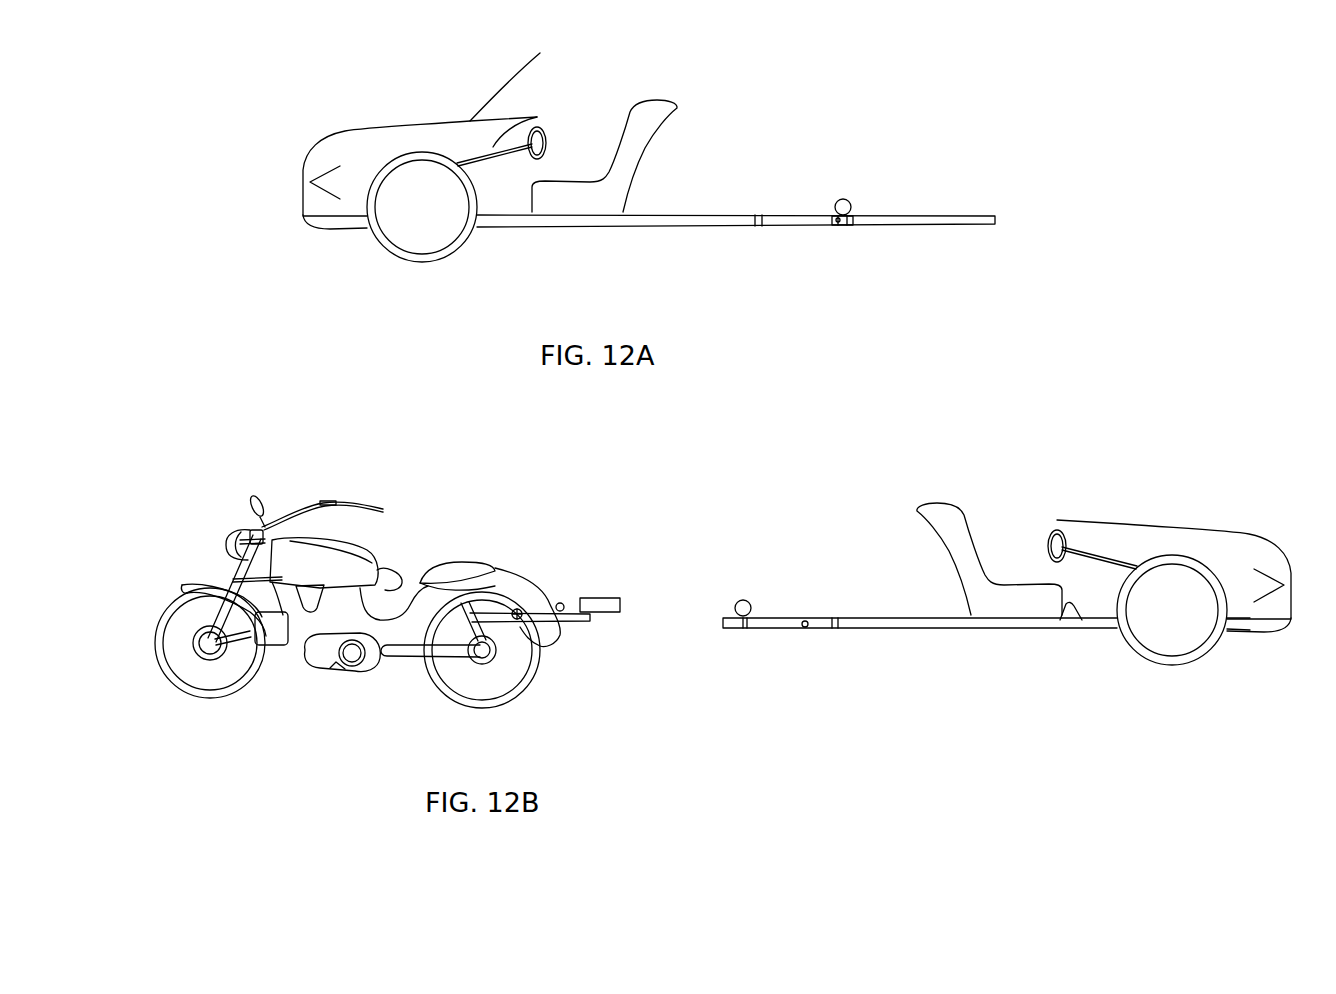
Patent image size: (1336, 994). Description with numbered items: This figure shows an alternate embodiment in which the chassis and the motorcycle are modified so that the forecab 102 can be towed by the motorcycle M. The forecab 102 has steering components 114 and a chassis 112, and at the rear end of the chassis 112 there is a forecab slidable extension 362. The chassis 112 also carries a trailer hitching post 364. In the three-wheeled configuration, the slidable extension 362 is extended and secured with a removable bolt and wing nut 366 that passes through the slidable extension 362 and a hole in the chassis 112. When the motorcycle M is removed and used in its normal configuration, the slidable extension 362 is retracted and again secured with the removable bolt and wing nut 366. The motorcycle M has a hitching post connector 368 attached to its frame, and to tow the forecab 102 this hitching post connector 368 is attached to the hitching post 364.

In FIG. 12A, the forecab 102 is at (385, 123).
In FIG. 12B, the forecab 102 is at (1212, 517).
In FIG. 12B, the chassis 112 is at (1067, 610).
In FIG. 12A, the steering components 114 is at (523, 117).
In FIG. 12A, the forecab slidable extension 362 is at (958, 226).
In FIG. 12B, the forecab slidable extension 362 is at (732, 628).
In FIG. 12A, the trailer hitching post 364 is at (847, 200).
In FIG. 12B, the trailer hitching post 364 is at (748, 600).
In FIG. 12A, the removable bolt and wing nut 366 is at (843, 226).
In FIG. 12B, the removable bolt and wing nut 366 is at (803, 617).
In FIG. 12B, the hitching post connector 368 is at (593, 597).
In FIG. 12B, the motorcycle M is at (513, 522).